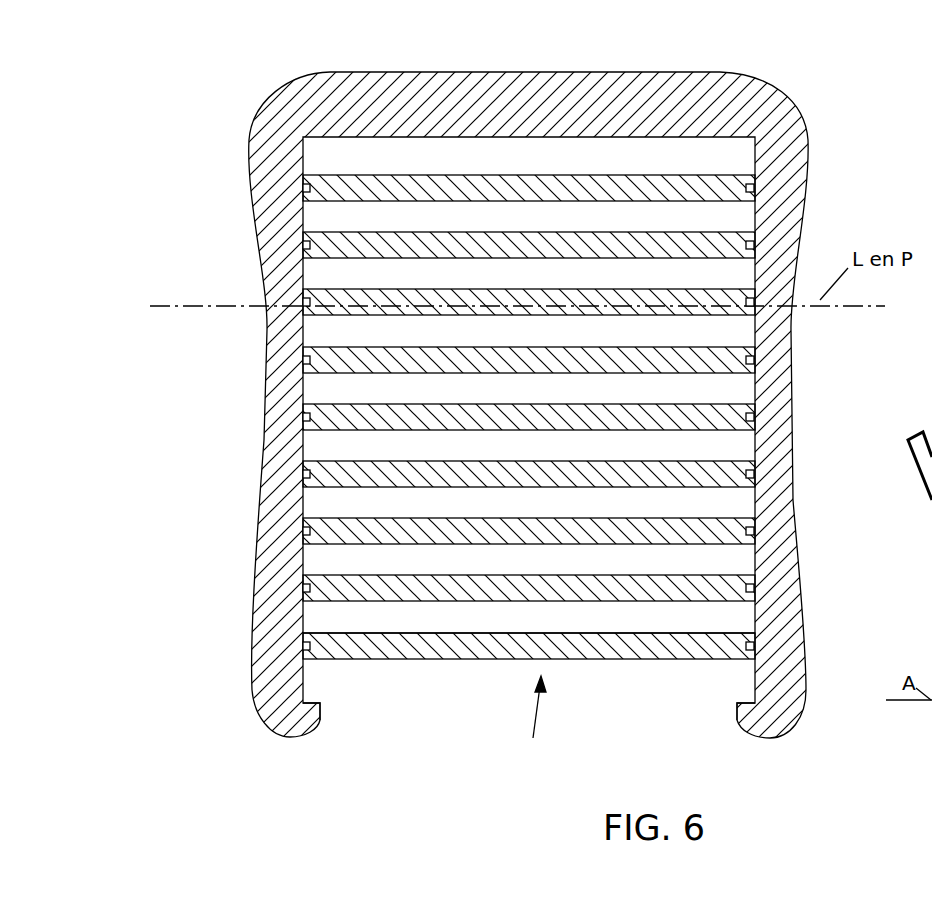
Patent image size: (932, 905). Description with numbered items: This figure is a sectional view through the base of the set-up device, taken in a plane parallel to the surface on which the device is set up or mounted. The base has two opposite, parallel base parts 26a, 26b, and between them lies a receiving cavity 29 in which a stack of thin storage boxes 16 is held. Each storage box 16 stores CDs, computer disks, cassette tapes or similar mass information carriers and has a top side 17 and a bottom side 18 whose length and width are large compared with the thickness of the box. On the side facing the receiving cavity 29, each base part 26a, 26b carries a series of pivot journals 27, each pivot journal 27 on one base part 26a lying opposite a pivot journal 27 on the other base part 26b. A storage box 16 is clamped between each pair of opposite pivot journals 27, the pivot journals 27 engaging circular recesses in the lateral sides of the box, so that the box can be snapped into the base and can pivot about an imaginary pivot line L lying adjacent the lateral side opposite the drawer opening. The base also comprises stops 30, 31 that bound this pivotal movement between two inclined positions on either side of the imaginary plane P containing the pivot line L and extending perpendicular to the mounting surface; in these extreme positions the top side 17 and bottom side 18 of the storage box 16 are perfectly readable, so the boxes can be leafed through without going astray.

The storage box 16 is at (529, 451).
The top side 17 is at (595, 660).
The bottom side 18 is at (611, 634).
The base part 26a is at (280, 470).
The base part 26b is at (775, 503).
The pivot journal 27 is at (305, 586).
The receiving cavity 29 is at (532, 723).
The stop 30 is at (318, 712).
The stop 31 is at (505, 130).